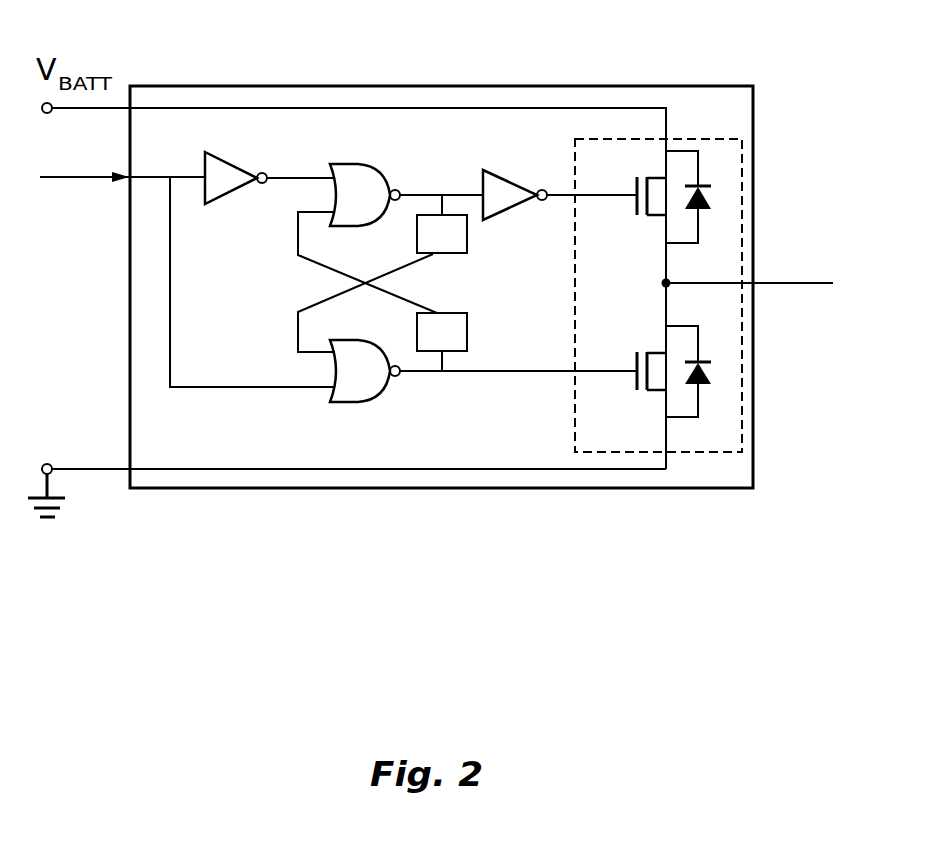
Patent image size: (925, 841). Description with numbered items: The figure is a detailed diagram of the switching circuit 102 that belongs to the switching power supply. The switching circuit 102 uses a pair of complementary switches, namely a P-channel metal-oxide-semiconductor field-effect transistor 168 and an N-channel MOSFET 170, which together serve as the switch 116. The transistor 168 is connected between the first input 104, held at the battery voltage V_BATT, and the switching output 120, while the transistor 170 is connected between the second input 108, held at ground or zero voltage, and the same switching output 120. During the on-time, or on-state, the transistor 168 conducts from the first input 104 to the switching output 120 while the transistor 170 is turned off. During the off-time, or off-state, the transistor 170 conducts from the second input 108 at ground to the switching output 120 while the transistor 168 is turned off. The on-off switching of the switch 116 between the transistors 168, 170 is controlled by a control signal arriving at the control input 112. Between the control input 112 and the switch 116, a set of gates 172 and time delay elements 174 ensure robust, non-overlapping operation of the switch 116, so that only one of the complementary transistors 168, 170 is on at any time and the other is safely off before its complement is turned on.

The switching circuit 102 is at (514, 86).
The first input 104 is at (97, 110).
The second input 108 is at (93, 468).
The control input 112 is at (82, 180).
The switch 116 is at (575, 162).
The switching output 120 is at (796, 282).
The P-channel MOSFET 168 is at (653, 220).
The N-channel MOSFET 170 is at (653, 393).
The set of gates 172 is at (228, 418).
The time delay elements 174 is at (467, 330).